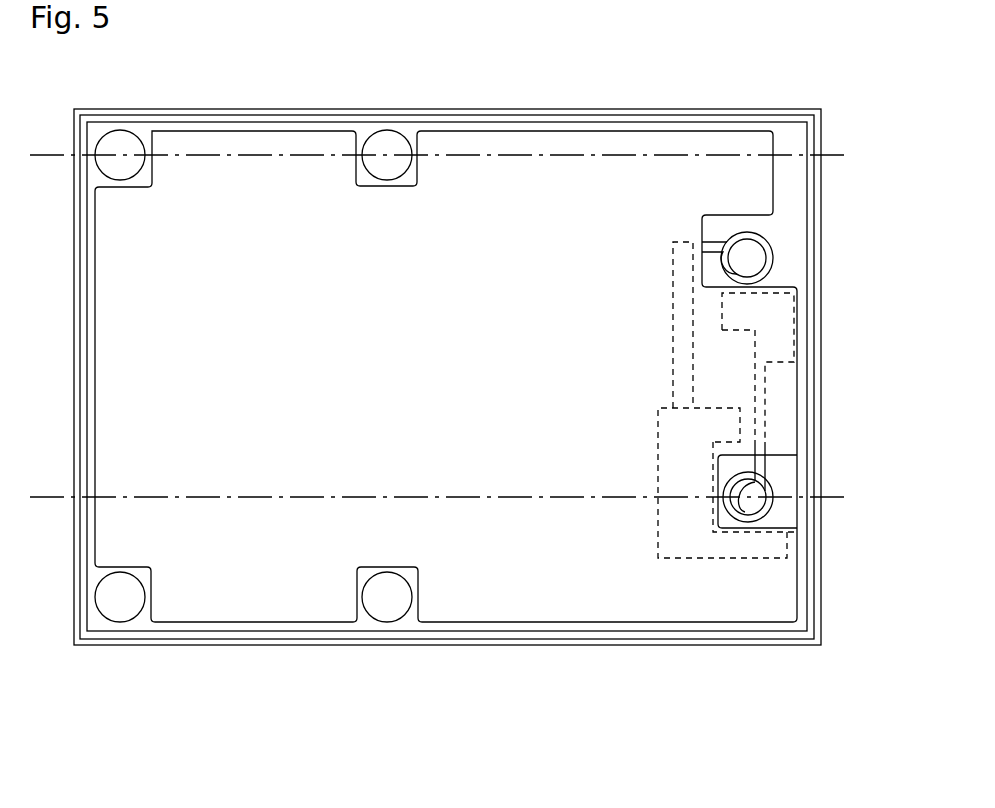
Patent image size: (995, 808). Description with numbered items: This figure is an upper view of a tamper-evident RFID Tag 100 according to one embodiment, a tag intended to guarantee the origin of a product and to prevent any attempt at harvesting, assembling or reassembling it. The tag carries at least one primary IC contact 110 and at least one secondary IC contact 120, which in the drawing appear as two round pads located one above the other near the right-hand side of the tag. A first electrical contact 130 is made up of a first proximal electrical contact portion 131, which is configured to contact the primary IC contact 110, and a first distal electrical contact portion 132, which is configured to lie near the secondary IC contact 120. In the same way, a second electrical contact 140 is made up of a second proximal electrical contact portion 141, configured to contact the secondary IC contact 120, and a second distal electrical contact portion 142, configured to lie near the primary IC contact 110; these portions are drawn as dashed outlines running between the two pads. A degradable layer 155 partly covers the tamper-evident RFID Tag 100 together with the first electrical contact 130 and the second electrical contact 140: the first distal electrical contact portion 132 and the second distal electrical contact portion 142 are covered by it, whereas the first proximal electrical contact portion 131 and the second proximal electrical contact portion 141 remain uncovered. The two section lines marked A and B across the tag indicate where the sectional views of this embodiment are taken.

The tamper-evident RFID Tag 100 is at (715, 61).
The primary IC contact 110 is at (772, 498).
The secondary IC contact 120 is at (738, 262).
The first electrical contact 130 is at (675, 539).
The first proximal electrical contact portion 131 is at (747, 502).
The first distal electrical contact portion 132 is at (778, 333).
The second electrical contact 140 is at (657, 390).
The second proximal electrical contact portion 141 is at (740, 263).
The second distal electrical contact portion 142 is at (691, 425).
The degradable layer 155 is at (521, 143).